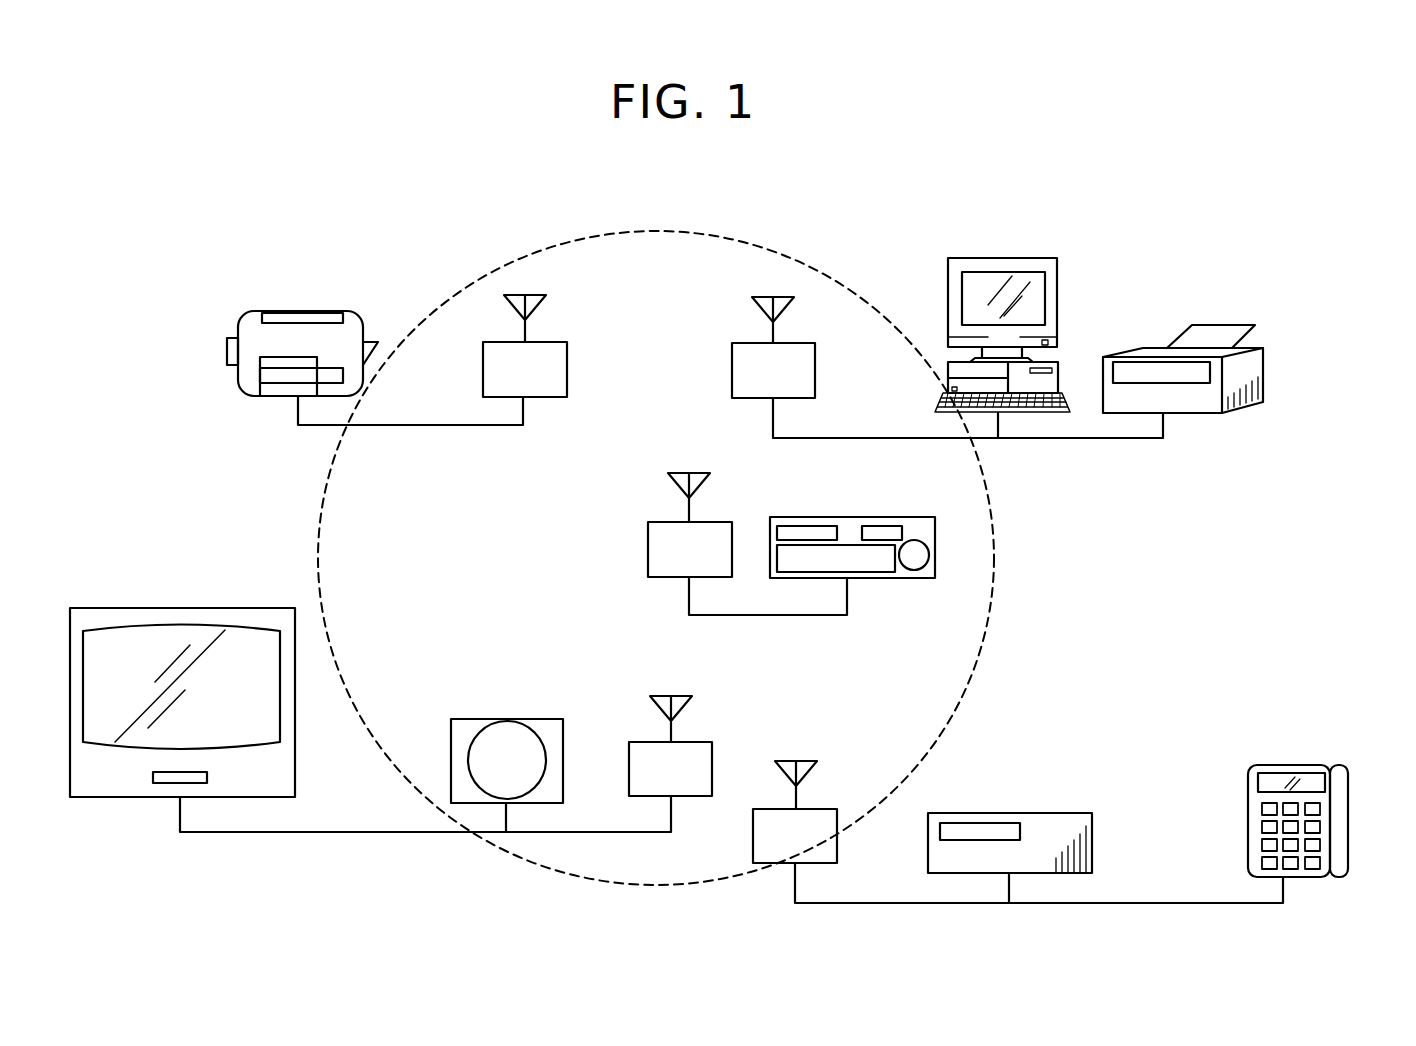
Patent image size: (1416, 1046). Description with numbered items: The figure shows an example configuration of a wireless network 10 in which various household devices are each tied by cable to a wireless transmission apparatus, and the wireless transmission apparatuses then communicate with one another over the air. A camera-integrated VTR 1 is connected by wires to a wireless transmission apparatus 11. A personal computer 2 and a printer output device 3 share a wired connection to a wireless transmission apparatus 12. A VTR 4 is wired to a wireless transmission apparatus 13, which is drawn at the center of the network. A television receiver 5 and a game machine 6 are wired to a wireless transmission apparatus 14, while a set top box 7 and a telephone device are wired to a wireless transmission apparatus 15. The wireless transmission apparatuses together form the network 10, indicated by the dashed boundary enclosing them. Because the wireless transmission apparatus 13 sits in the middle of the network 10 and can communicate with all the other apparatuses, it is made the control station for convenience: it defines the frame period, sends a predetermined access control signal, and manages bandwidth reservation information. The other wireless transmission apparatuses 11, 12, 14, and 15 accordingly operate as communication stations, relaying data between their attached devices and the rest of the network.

The camera-integrated VTR 1 is at (320, 311).
The personal computer 2 is at (1012, 258).
The printer output device 3 is at (1222, 325).
The VTR 4 is at (903, 517).
The television receiver 5 is at (155, 608).
The game machine 6 is at (473, 719).
The set top box 7 is at (1053, 813).
The network 10 is at (995, 582).
The wireless transmission apparatus 11 is at (548, 342).
The wireless transmission apparatus 12 is at (750, 343).
The wireless transmission apparatus 13 is at (648, 545).
The wireless transmission apparatus 14 is at (648, 742).
The wireless transmission apparatus 15 is at (765, 809).